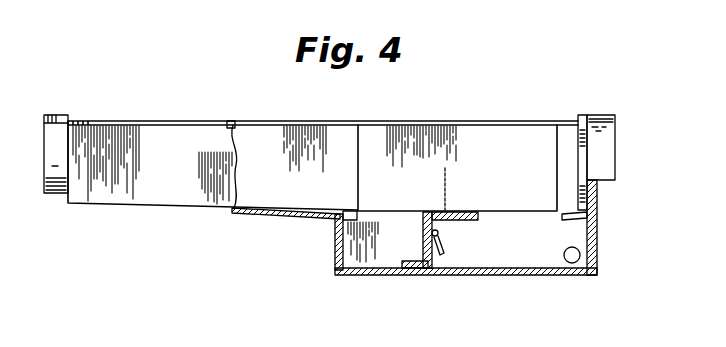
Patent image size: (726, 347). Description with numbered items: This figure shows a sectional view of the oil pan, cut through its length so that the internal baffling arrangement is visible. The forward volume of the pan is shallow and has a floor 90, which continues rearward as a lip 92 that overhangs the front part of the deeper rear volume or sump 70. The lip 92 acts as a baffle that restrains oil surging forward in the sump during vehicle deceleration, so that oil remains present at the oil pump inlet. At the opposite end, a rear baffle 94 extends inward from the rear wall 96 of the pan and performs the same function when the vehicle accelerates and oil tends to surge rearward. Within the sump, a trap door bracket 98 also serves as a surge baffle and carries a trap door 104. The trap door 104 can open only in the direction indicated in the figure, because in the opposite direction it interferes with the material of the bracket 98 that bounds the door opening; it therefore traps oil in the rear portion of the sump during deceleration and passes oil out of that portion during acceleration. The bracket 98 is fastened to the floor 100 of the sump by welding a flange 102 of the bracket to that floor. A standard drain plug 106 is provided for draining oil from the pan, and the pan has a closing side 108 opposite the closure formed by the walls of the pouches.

The rear volume 70 is at (538, 258).
The floor 90 is at (266, 210).
The lip 92 is at (344, 220).
The rear baffle 94 is at (568, 211).
The rear wall 96 is at (598, 200).
The trap door bracket 98 is at (456, 212).
The floor 100 is at (485, 273).
The flange of the bracket 102 is at (405, 272).
The trap door 104 is at (444, 243).
The drain plug 106 is at (581, 255).
The closing side 108 is at (236, 158).